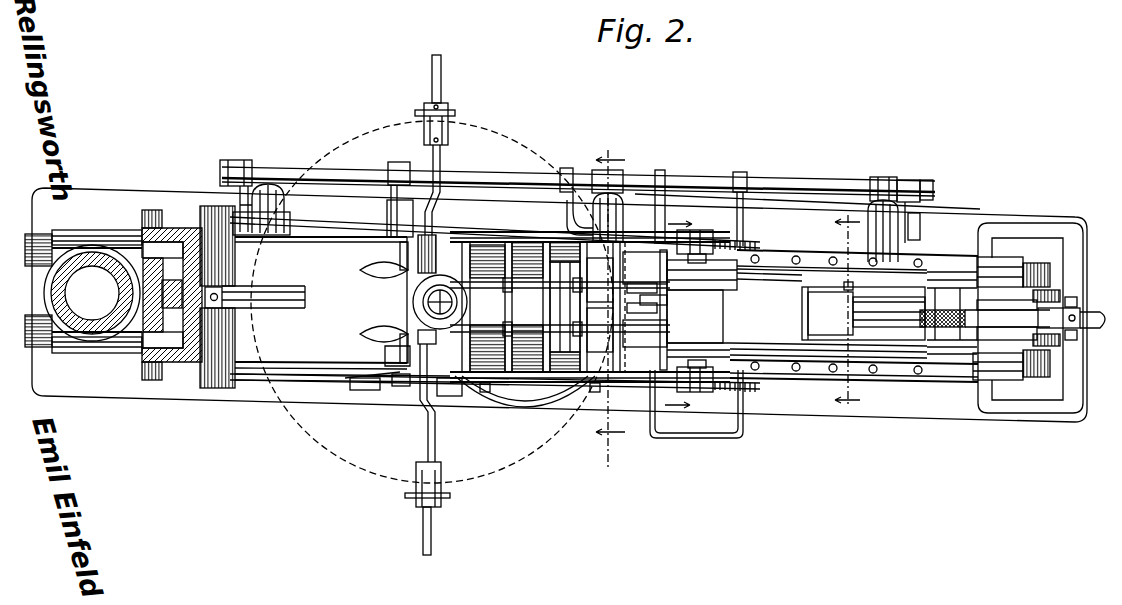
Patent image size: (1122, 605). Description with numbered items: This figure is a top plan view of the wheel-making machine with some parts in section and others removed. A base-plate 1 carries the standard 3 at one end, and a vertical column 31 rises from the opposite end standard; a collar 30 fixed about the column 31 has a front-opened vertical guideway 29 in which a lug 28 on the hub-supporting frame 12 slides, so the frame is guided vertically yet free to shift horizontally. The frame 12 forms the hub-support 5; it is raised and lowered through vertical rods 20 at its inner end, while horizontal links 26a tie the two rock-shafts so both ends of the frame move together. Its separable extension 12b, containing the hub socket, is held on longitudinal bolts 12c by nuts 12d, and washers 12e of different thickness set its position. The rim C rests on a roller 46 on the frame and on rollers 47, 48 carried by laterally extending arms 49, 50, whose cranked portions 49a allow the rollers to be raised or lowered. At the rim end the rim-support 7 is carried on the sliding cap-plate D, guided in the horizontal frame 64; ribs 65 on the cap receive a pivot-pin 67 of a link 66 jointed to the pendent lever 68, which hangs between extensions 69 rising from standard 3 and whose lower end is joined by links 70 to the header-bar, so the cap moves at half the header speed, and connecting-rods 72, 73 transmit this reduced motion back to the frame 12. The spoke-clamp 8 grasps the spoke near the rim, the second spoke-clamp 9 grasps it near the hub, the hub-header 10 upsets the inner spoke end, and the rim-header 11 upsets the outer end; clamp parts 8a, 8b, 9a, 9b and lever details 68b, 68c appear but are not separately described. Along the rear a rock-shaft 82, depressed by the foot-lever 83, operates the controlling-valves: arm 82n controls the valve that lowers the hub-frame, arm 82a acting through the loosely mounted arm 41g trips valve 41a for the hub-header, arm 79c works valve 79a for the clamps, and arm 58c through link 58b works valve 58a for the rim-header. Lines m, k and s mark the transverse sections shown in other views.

The base-plate 1 is at (559, 305).
The standard 3 is at (1060, 366).
The hub-support 5 is at (422, 300).
The rim-support 7 is at (630, 292).
The spoke-clamp 8 is at (598, 293).
The clutch disc 8a is at (582, 268).
The clutch yoke 8b is at (593, 360).
The second spoke-clamp 9 is at (460, 292).
The upper shaft 9a is at (486, 248).
The lower shaft 9b is at (515, 340).
The hub-header 10 is at (433, 312).
The rim-header 11 is at (649, 305).
The hub-supporting frame 12 is at (325, 297).
The extension 12b is at (395, 347).
The longitudinal bolts 12c is at (420, 267).
The nuts 12d is at (484, 307).
The washers 12e is at (388, 276).
The vertical rods 20 is at (395, 233).
The horizontal links 26a is at (458, 398).
The guiding-lug 28 is at (175, 285).
The vertical guideway 29 is at (142, 327).
The collar 30 is at (128, 258).
The vertical column 31 is at (92, 293).
The controlling-valve 41a is at (283, 208).
The arm 41g is at (268, 183).
The supporting-roller 46 is at (270, 302).
The supporting-roller 47 is at (407, 508).
The supporting-roller 48 is at (449, 122).
The arm 49 is at (425, 446).
The cranked portion 49a is at (435, 200).
The arm 50 is at (454, 79).
The controlling-valve 58a is at (868, 242).
The link 58b is at (880, 198).
The arm 58c is at (903, 190).
The horizontal frame 64 is at (947, 267).
The vertical ribs 65 is at (884, 294).
The link 66 is at (888, 317).
The pivot-pin 67 is at (844, 286).
The pendent lever 68 is at (1082, 310).
The handle pin 68b is at (1077, 297).
The handle pin 68c is at (1077, 335).
The extensions 69 is at (1010, 298).
The horizontal links 70 is at (941, 291).
The connecting-rod 72 is at (292, 373).
The connecting-rod 73 is at (330, 221).
The controlling-valve 79a is at (605, 240).
The arm 79c is at (618, 176).
The rock-shaft 82 is at (497, 180).
The arm 82a is at (262, 178).
The arm 82n is at (392, 195).
The foot-lever 83 is at (713, 440).
The rim C is at (432, 296).
The cap-plate D is at (764, 300).
The section line k k is at (847, 315).
The section line m m is at (610, 302).
The section line s s is at (676, 314).